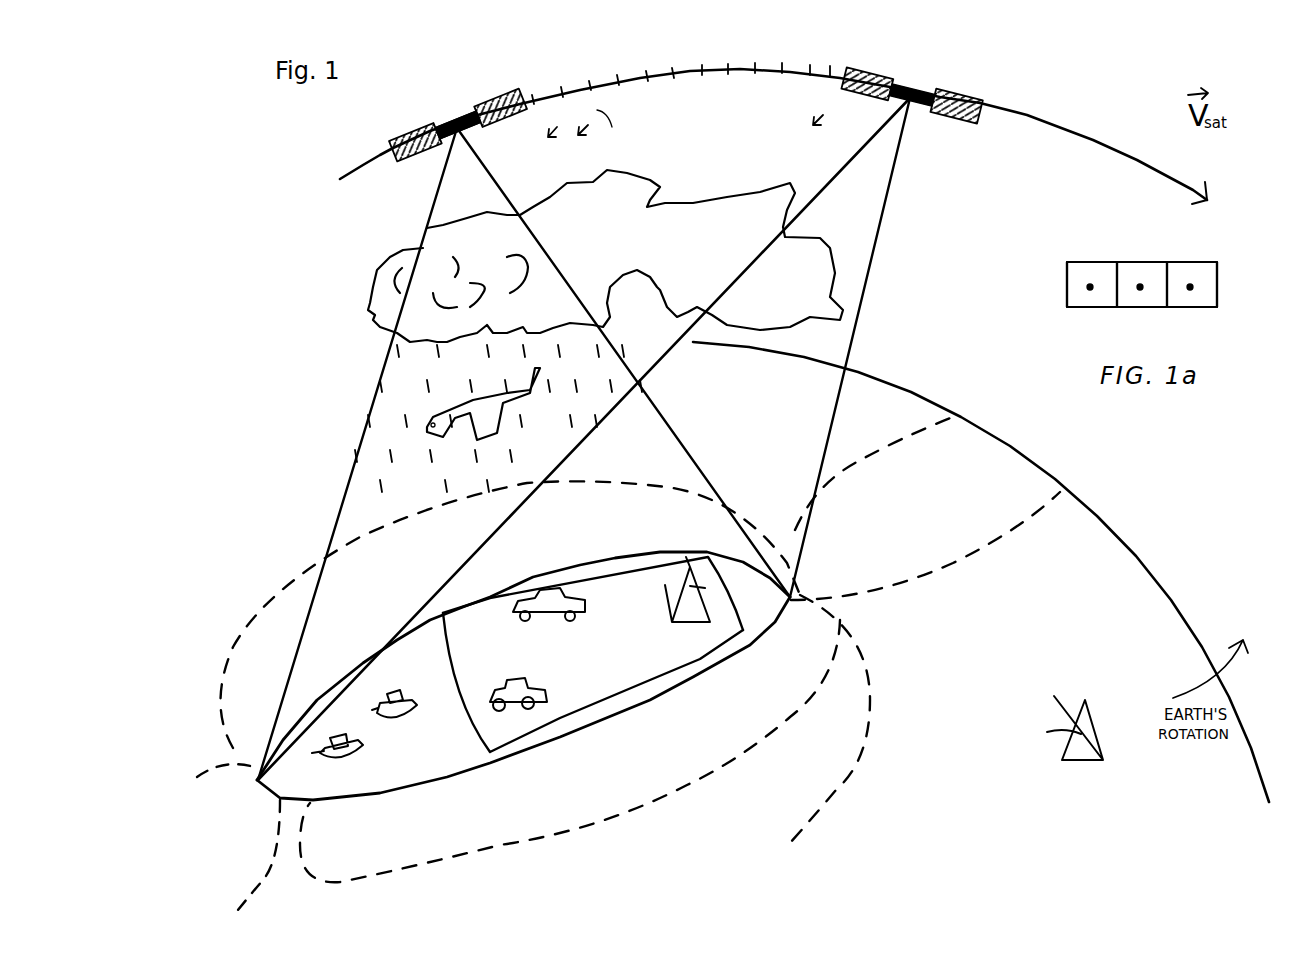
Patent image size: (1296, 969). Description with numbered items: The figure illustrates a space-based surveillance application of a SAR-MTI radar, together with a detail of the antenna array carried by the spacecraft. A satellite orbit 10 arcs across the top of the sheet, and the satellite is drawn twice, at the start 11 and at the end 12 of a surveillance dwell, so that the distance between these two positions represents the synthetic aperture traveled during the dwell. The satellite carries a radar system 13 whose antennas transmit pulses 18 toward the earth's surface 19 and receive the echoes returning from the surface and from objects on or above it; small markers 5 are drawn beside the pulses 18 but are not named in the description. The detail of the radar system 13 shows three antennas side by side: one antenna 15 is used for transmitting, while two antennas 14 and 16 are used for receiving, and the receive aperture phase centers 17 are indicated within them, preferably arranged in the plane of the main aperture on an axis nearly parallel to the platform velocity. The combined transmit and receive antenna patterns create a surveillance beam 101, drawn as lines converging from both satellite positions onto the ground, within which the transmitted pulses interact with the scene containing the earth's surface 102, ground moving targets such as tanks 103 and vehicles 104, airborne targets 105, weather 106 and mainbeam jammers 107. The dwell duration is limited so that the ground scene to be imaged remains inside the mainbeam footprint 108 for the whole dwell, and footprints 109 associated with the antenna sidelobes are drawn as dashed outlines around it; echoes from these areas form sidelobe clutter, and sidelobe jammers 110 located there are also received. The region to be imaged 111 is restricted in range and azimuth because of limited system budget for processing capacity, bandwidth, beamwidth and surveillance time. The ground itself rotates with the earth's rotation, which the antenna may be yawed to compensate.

In FIG. 1, the direction arrow 5 is at (692, 111).
In FIG. 1, the satellite orbit 10 is at (1134, 158).
In FIG. 1, the satellite at start of surveillance dwell 11 is at (409, 128).
In FIG. 1, the satellite at end of surveillance dwell 12 is at (871, 79).
In FIG. 1, the radar system 13 is at (454, 113).
In FIG. 1A, the radar system 13 is at (1219, 322).
In FIG. 1A, the receive antenna 14 is at (1076, 263).
In FIG. 1A, the transmit antenna 15 is at (1126, 263).
In FIG. 1A, the receive antenna 16 is at (1176, 263).
In FIG. 1A, the receive aperture phase centers 17 is at (1086, 290).
In FIG. 1, the transmitted pulses 18 is at (612, 126).
In FIG. 1, the earth's surface 19 is at (973, 594).
In FIG. 1, the surveillance beam 101 is at (324, 545).
In FIG. 1, the earth's surface in the scene 102 is at (574, 663).
In FIG. 1, the tanks 103 is at (366, 746).
In FIG. 1, the vehicles 104 is at (586, 600).
In FIG. 1, the airborne targets 105 is at (523, 408).
In FIG. 1, the weather 106 is at (463, 216).
In FIG. 1, the mainbeam jammers 107 is at (678, 589).
In FIG. 1, the mainbeam footprint 108 is at (518, 755).
In FIG. 1, the sidelobe footprints 109 is at (775, 724).
In FIG. 1, the sidelobe jammers 110 is at (1092, 737).
In FIG. 1, the region to be imaged 111 is at (492, 762).